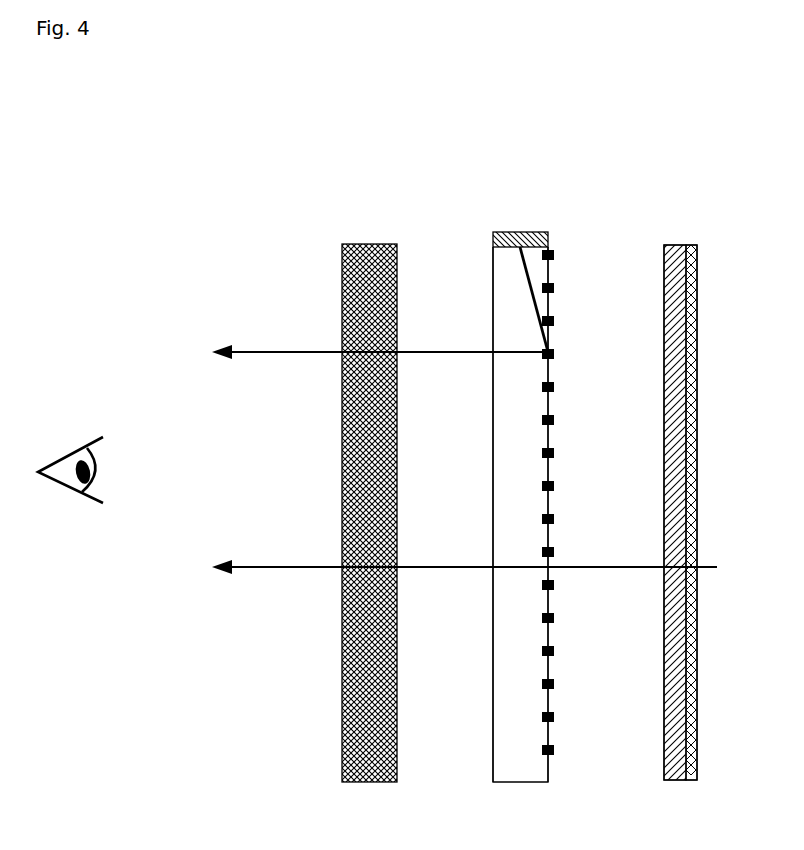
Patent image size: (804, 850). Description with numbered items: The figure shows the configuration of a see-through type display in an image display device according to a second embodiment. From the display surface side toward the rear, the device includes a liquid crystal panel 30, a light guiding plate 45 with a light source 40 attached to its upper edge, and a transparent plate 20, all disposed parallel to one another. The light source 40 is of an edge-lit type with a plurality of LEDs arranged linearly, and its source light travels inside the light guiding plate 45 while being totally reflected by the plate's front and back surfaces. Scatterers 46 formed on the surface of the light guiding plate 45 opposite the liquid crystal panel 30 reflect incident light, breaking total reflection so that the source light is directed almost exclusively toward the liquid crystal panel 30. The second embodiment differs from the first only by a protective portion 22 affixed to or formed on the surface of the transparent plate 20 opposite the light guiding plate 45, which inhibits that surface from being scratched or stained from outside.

The transparent plate 20 is at (677, 245).
The protective portion 22 is at (698, 300).
The liquid crystal panel 30 is at (373, 244).
The light source 40 is at (518, 232).
The light guiding plate 45 is at (492, 262).
The scatterers 46 is at (552, 282).